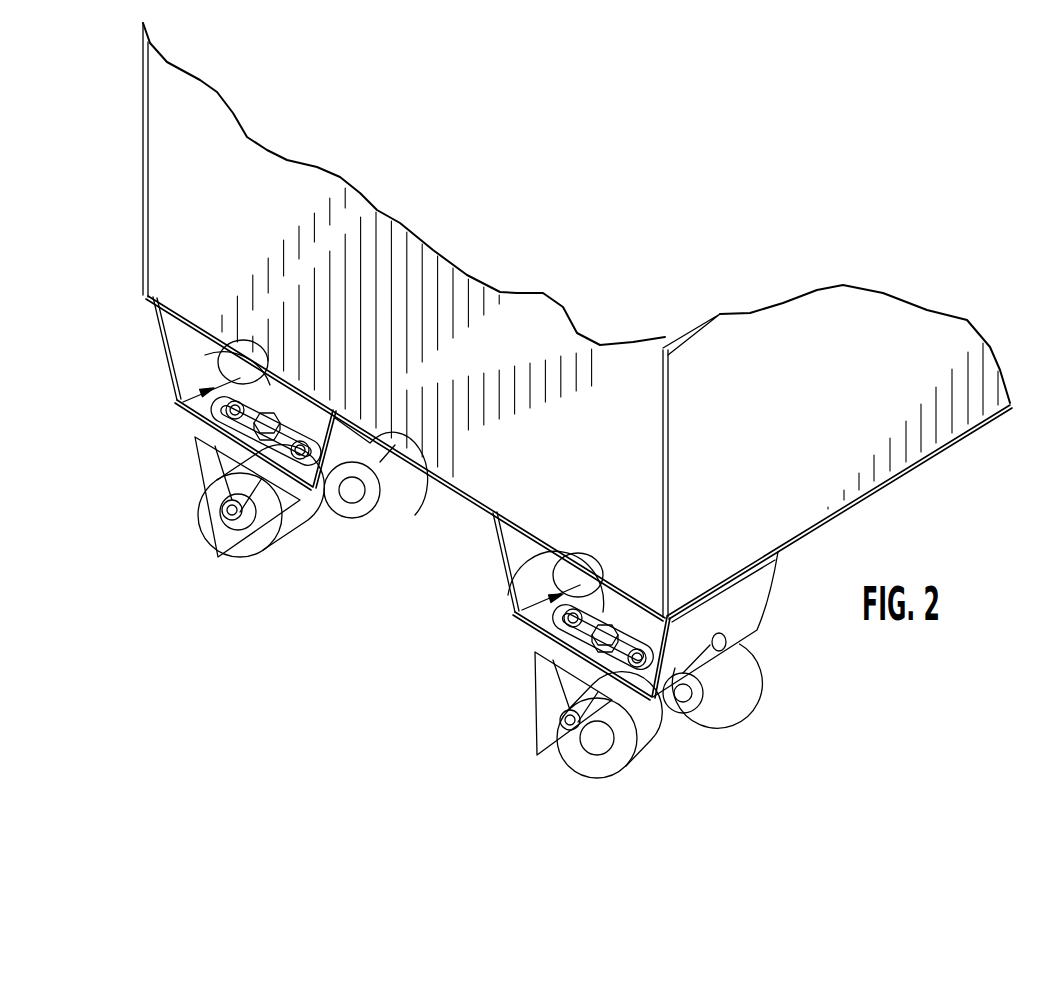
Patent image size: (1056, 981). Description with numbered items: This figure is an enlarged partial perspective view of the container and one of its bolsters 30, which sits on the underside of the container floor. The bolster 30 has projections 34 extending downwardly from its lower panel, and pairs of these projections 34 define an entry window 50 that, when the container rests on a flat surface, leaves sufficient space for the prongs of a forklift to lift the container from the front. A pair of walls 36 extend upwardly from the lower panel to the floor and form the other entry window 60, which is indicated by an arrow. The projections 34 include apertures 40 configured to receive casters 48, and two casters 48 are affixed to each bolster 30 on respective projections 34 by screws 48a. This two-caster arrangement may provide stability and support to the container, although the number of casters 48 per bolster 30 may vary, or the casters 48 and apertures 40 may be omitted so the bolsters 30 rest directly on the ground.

The bolster 30 is at (338, 505).
The projection 34 is at (186, 404).
The wall 36 is at (370, 445).
The aperture 40 is at (216, 552).
The caster 48 is at (310, 535).
The screw 48a is at (500, 562).
The entry window 50 is at (728, 669).
The entry window 60 is at (198, 394).